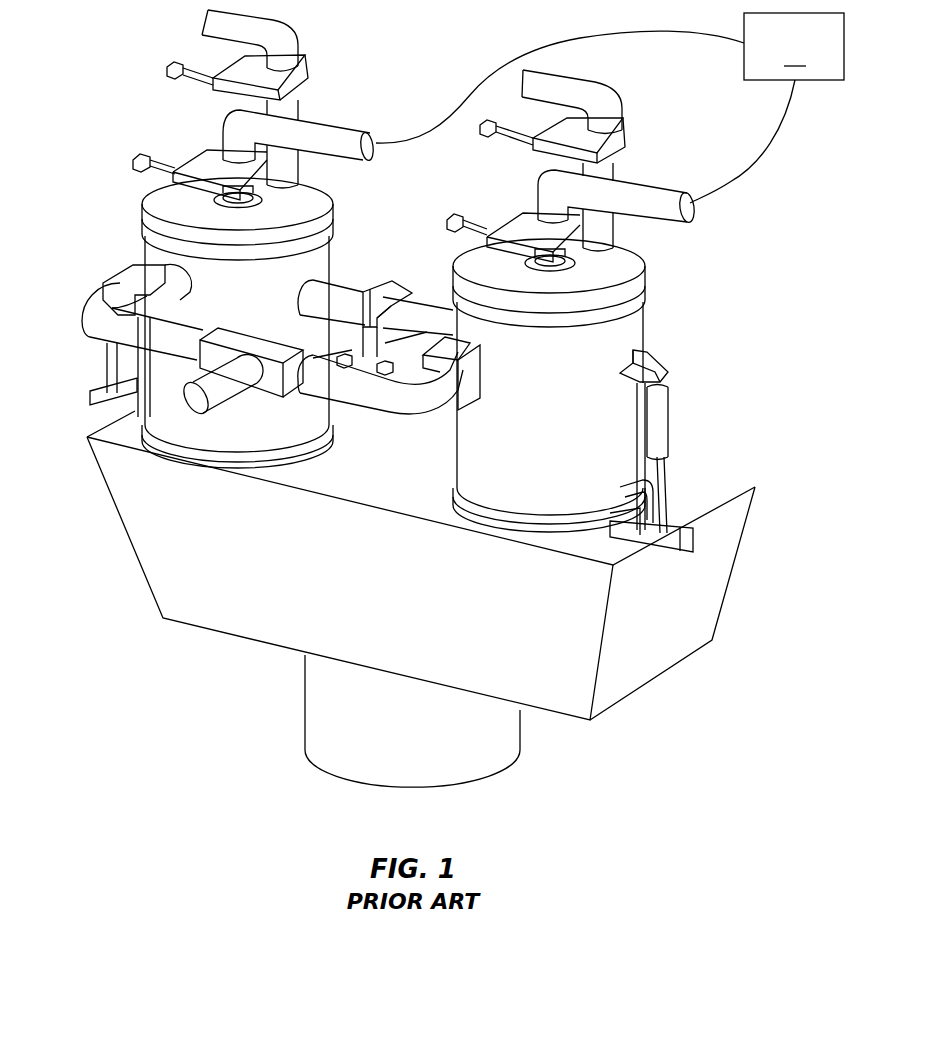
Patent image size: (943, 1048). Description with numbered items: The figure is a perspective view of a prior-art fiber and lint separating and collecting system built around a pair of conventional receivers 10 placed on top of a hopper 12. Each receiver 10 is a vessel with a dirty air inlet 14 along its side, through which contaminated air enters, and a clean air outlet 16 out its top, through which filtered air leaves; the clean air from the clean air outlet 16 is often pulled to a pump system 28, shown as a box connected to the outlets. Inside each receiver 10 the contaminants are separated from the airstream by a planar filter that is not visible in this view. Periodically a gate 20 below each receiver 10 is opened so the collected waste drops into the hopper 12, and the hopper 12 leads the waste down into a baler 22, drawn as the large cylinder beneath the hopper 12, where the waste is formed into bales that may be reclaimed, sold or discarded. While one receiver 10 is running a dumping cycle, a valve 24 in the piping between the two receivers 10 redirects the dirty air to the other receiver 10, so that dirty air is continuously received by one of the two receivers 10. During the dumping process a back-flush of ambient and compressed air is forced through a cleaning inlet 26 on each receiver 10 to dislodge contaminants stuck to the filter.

The receiver 10 is at (152, 260).
The hopper 12 is at (720, 540).
The dirty air inlet 14 is at (147, 263).
The clean air outlet 16 is at (220, 197).
The gate 20 is at (147, 436).
The baler 22 is at (338, 718).
The valve 24 is at (213, 357).
The cleaning inlet 26 is at (376, 150).
The pump system 28 is at (610, 108).